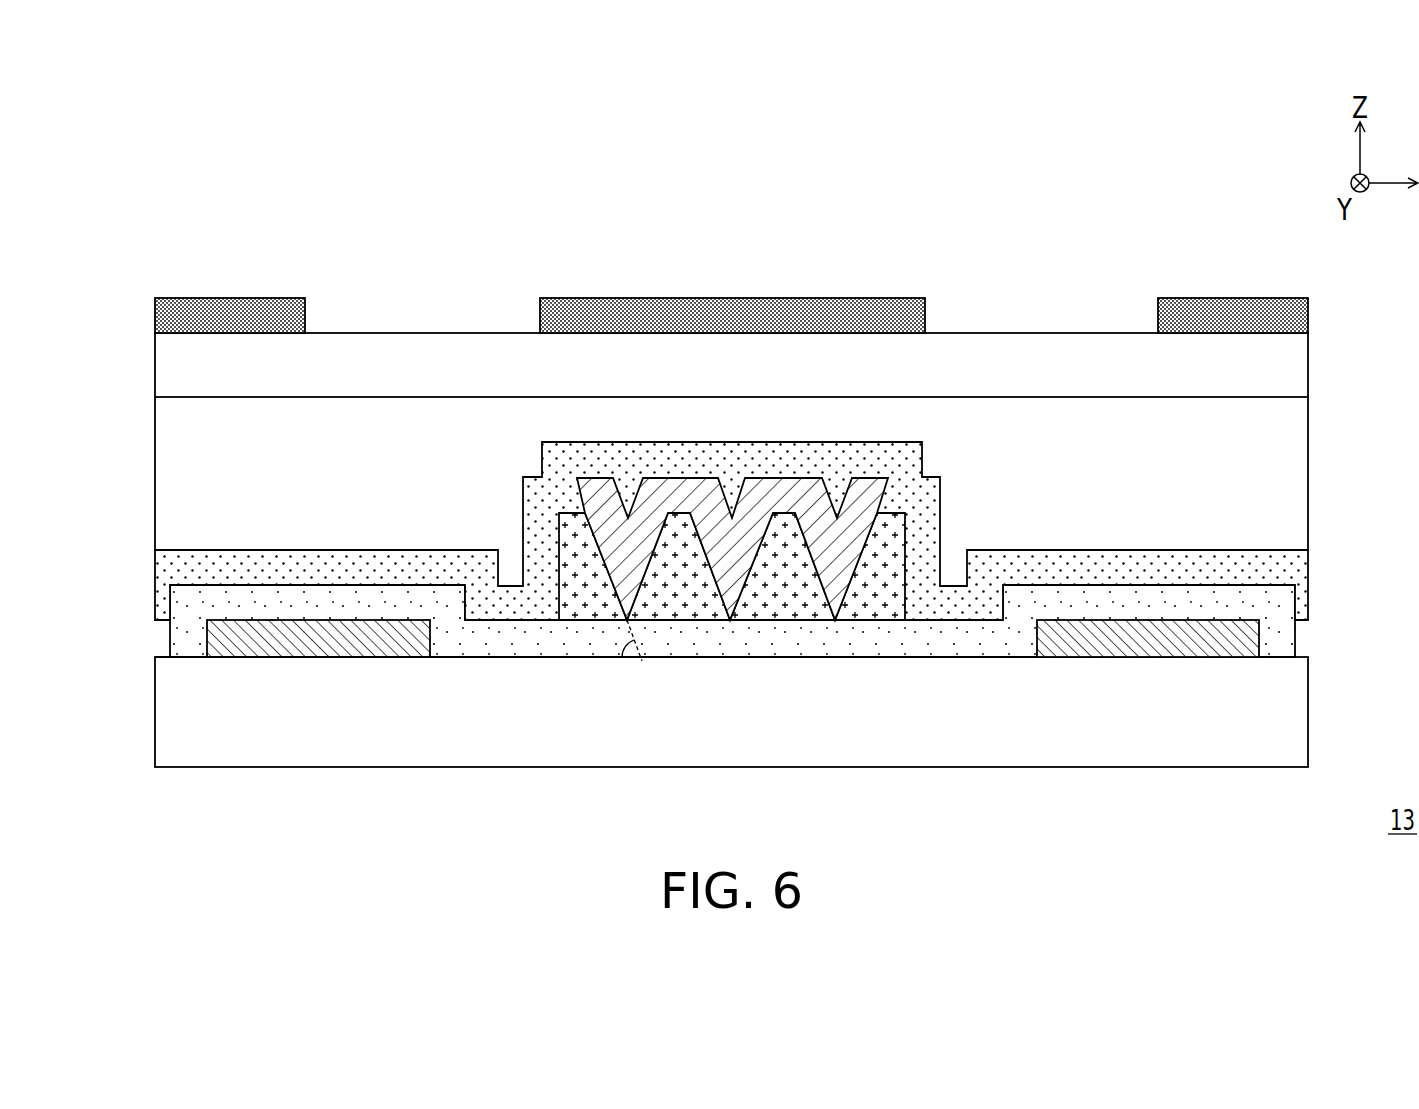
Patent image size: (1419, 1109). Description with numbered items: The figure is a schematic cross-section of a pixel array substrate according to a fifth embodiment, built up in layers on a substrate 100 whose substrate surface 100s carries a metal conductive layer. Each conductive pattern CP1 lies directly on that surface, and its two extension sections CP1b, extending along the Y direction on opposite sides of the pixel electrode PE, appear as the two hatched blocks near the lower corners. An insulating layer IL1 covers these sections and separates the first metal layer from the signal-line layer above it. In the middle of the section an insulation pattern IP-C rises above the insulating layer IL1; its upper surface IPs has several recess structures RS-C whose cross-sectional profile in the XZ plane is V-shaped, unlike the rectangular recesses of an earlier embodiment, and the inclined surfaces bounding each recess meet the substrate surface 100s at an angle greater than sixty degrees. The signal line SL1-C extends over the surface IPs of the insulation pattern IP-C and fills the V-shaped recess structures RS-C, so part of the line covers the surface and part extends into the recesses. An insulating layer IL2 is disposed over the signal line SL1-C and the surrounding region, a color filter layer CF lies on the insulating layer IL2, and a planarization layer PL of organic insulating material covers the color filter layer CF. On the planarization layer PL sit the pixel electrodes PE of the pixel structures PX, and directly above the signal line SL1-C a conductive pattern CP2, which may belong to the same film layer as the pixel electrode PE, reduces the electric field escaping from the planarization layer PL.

The pixel electrode PE is at (731, 290).
The pixel structure PX is at (215, 306).
The signal line SL1-C is at (673, 488).
The recess structure RS-C is at (812, 519).
The conductive pattern CP2 is at (907, 303).
The planarization layer PL is at (1300, 366).
The color filter layer CF is at (1300, 473).
The insulating layer IL2 is at (1300, 568).
The insulating layer IL1 is at (1300, 638).
The substrate 100 is at (1300, 710).
The substrate surface 100s is at (175, 648).
The extension section CP1b is at (733, 720).
The conductive pattern CP1 is at (312, 647).
The surface IPs is at (893, 503).
The insulation pattern IP-C is at (887, 542).